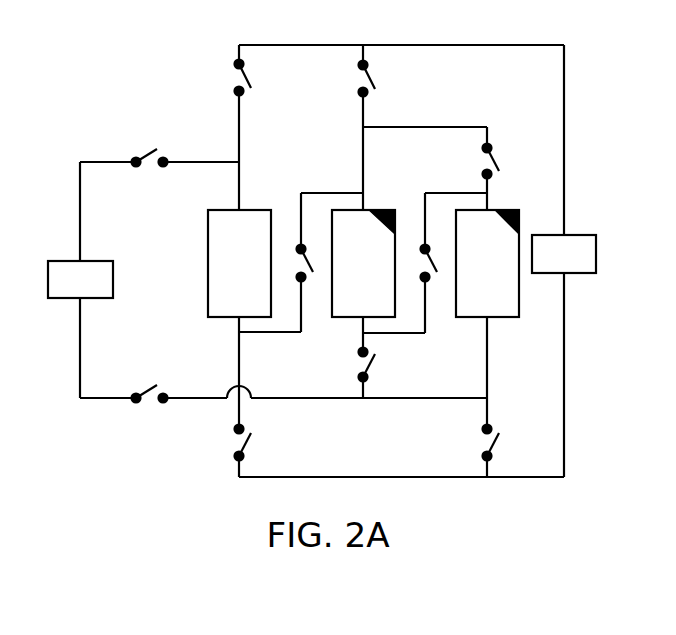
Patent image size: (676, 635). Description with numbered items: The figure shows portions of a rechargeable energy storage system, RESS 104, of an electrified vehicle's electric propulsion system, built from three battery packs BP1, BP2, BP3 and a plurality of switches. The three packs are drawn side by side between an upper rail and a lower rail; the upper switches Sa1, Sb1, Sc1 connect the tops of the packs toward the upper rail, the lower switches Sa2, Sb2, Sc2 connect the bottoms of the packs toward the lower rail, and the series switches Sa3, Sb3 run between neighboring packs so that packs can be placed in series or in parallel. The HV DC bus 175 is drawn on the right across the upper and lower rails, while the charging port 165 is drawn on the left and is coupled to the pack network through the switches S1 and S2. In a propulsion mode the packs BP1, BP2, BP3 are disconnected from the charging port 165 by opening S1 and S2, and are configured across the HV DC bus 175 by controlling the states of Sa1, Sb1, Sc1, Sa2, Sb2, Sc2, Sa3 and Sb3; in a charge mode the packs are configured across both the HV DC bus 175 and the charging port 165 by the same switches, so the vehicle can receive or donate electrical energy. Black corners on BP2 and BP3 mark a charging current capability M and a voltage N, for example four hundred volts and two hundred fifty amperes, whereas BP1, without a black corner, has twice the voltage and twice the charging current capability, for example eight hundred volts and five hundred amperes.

The RESS 104 is at (358, 28).
The charging port 165 is at (64, 291).
The HV DC bus 175 is at (548, 267).
The switch S1 is at (150, 173).
The switch S2 is at (150, 409).
The upper switch Sa1 is at (225, 127).
The lower switch Sa2 is at (224, 397).
The series switch Sa3 is at (301, 262).
The upper switch Sb1 is at (349, 127).
The lower switch Sb2 is at (349, 357).
The series switch Sb3 is at (425, 263).
The upper switch Sc1 is at (473, 168).
The lower switch Sc2 is at (473, 397).
The battery pack BP1 is at (259, 273).
The battery pack BP2 is at (383, 273).
The battery pack BP3 is at (507, 273).